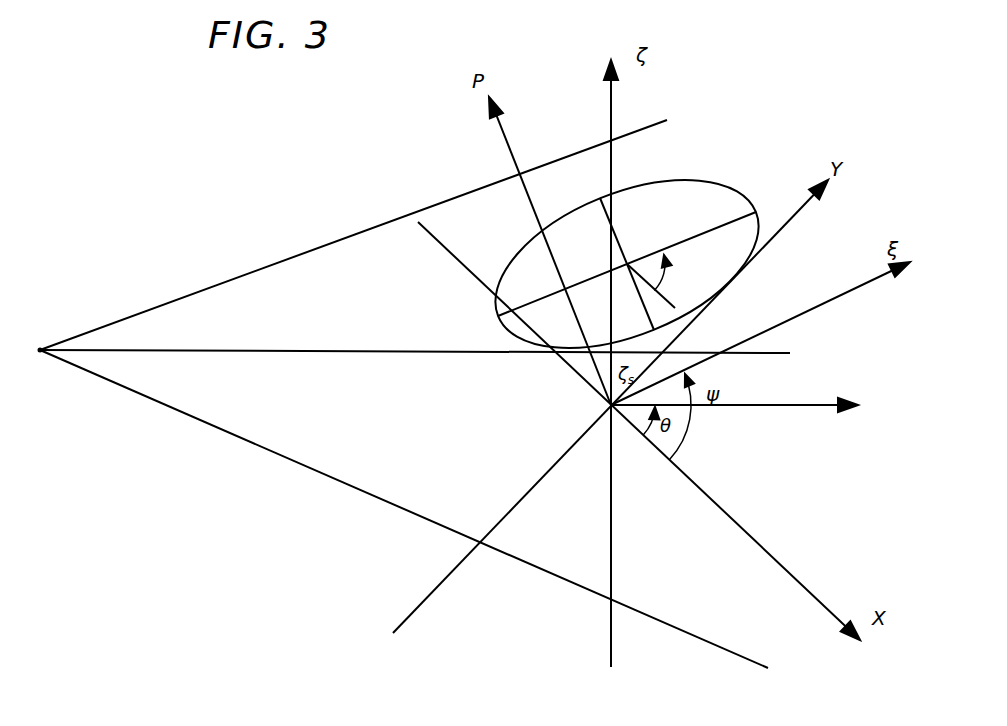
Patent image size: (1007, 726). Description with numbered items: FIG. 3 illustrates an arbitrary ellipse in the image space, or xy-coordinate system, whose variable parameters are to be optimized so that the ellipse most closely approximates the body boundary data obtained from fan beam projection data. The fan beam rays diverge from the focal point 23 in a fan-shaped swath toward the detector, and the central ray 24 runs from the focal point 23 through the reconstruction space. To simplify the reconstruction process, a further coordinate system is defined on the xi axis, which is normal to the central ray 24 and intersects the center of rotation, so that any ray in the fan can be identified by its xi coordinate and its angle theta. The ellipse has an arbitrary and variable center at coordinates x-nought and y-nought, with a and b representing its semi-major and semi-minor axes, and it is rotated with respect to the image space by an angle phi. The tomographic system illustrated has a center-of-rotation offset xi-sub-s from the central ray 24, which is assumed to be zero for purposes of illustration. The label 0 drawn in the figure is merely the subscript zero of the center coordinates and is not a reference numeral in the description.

The focal point 23 is at (40, 350).
The central ray 24 is at (407, 353).
The elliptical object cross-section centered at (X0,Y0) 0 is at (628, 262).